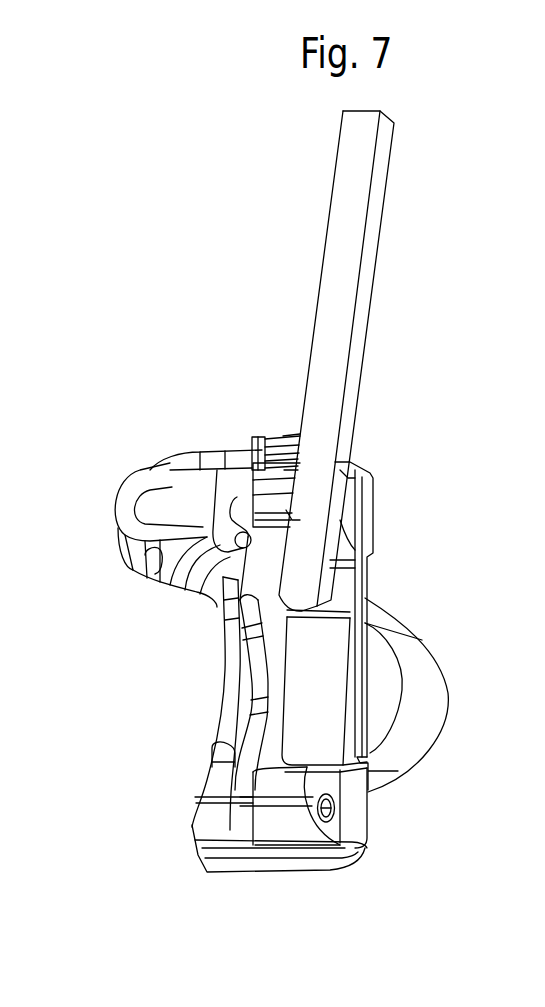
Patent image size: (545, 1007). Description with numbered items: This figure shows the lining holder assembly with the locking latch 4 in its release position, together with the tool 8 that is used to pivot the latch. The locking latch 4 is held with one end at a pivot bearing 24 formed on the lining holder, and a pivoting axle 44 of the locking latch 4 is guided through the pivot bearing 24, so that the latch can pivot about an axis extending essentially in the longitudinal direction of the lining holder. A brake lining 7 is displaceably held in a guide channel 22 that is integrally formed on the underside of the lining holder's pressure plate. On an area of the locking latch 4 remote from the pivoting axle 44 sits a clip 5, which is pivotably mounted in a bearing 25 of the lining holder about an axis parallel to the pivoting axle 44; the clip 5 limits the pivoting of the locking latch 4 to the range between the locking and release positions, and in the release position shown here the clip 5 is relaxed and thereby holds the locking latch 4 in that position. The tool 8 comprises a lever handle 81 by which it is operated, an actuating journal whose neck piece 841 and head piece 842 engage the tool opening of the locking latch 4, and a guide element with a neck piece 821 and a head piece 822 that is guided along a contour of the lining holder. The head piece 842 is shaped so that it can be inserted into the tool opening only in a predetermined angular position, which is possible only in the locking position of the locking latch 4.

The tool 8 is at (338, 361).
The lever handle 81 is at (348, 203).
The neck piece 821 is at (282, 438).
The head piece 822 is at (252, 437).
The clip 5 is at (150, 488).
The bearing 25 is at (277, 498).
The guide channel 22 is at (370, 577).
The brake lining 7 is at (412, 742).
The locking latch 4 is at (278, 683).
The neck piece 841 is at (260, 607).
The head piece 842 is at (222, 603).
The pivot bearing 24 is at (288, 826).
The pivoting axle 44 is at (334, 810).